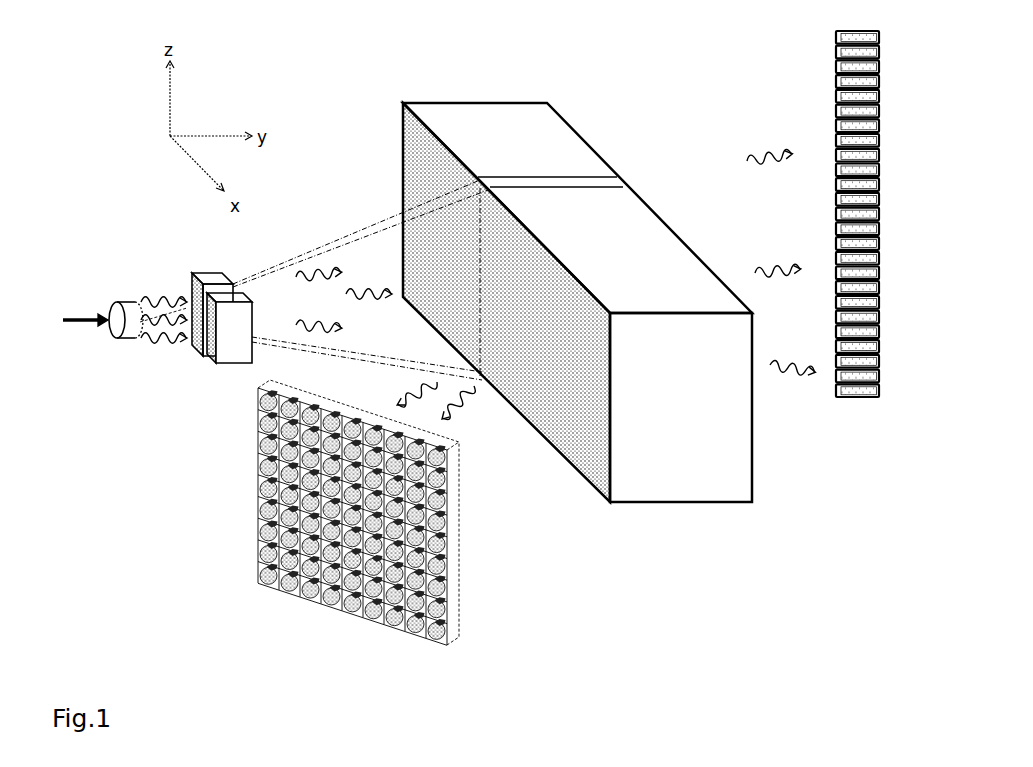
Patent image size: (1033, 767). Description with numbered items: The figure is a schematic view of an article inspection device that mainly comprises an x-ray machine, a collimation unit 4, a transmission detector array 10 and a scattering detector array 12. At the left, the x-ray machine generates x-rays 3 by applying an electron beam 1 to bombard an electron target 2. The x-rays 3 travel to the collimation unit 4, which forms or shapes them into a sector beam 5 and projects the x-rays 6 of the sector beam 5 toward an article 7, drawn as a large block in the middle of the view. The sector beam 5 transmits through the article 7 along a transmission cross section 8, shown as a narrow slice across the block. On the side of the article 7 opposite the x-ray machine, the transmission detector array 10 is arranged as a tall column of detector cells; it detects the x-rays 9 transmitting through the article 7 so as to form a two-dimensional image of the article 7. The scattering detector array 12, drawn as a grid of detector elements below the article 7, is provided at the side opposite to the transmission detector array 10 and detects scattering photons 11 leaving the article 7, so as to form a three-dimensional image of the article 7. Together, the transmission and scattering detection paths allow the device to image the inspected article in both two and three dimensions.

The electron beam 1 is at (85, 310).
The electron target 2 is at (125, 303).
The x-rays 3 is at (164, 306).
The collimation unit 4 is at (218, 272).
The sector beam 5 is at (296, 253).
The x-rays of the sector beam 6 is at (343, 300).
The article 7 is at (484, 111).
The transmission cross section 8 is at (568, 185).
The transmitted x-rays 9 is at (781, 252).
The transmission detector array 10 is at (832, 79).
The scattering photons 11 is at (442, 407).
The scattering detector array 12 is at (255, 523).